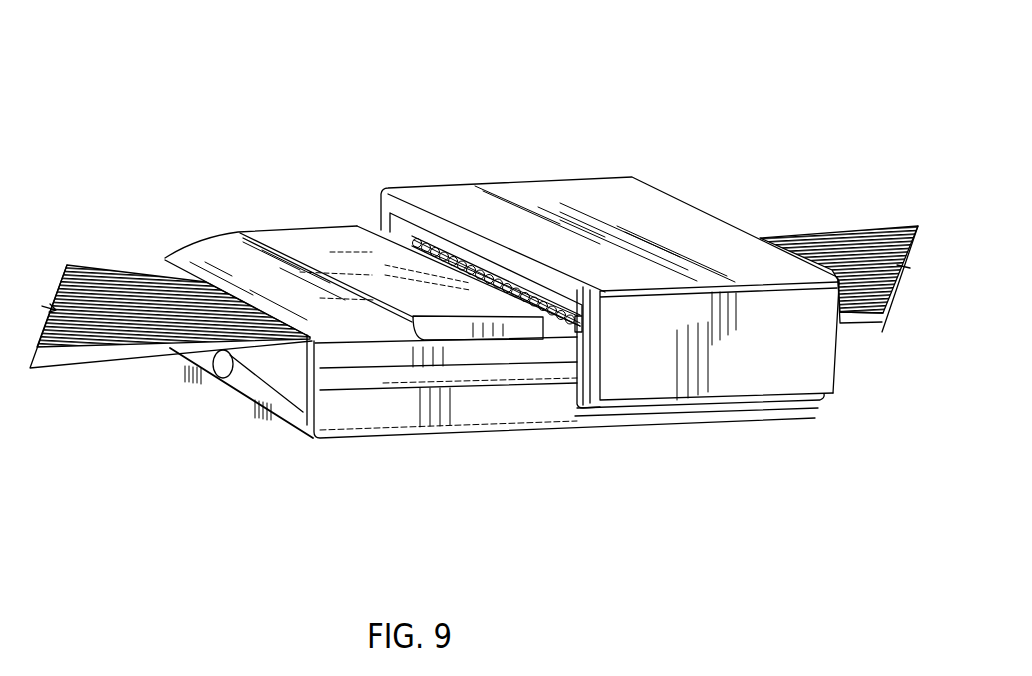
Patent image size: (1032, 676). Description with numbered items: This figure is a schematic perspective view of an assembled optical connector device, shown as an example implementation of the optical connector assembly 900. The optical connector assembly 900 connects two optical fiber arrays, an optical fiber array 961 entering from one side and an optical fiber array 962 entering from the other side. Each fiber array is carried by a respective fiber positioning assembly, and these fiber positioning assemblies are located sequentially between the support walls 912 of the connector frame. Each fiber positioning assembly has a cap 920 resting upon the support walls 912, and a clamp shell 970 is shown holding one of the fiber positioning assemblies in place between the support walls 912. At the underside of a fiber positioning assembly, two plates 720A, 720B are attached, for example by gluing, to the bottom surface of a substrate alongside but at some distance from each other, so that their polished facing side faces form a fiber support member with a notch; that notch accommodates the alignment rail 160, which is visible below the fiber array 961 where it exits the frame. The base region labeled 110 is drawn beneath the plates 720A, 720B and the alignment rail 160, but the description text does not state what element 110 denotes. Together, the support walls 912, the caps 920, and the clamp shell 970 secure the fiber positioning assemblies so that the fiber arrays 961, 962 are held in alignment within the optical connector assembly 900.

The optical connector assembly 900 is at (393, 40).
The optical fiber array 961 is at (100, 249).
The optical fiber array 962 is at (828, 219).
The cap 920 is at (282, 236).
The clamp shell 970 is at (580, 185).
The support wall 912 is at (318, 406).
The base plate 110 is at (254, 417).
The plate 720B is at (292, 405).
The plate 720A is at (192, 370).
The alignment rail 160 is at (216, 379).